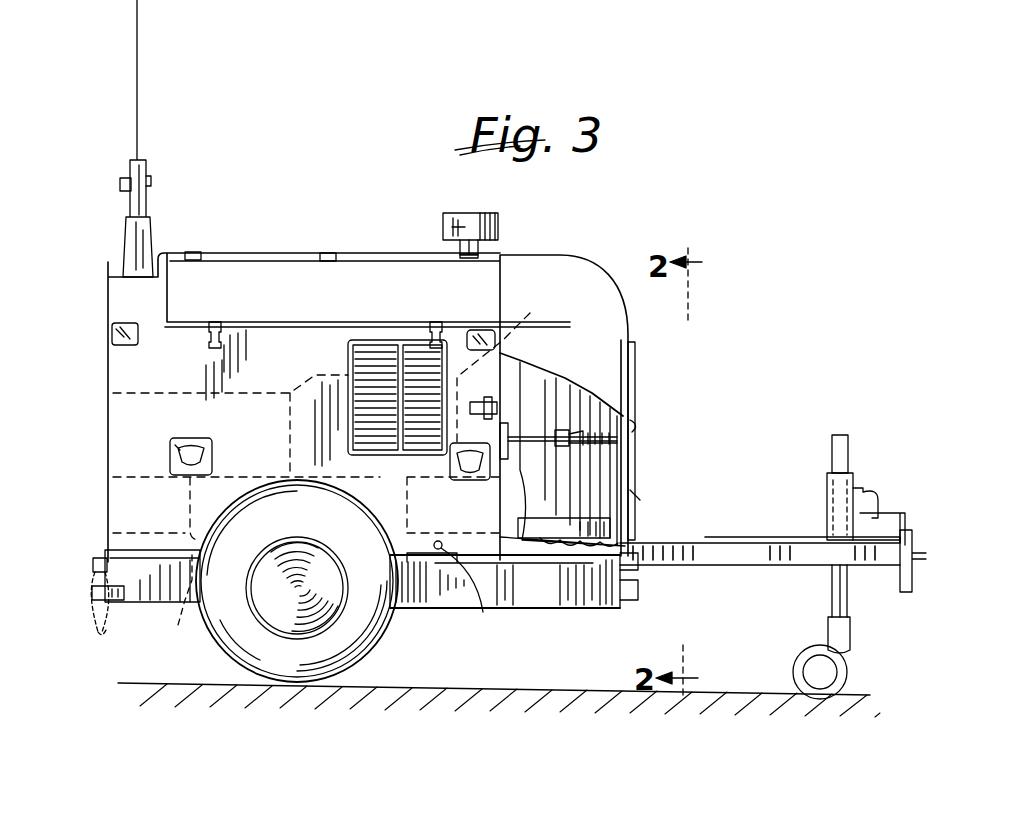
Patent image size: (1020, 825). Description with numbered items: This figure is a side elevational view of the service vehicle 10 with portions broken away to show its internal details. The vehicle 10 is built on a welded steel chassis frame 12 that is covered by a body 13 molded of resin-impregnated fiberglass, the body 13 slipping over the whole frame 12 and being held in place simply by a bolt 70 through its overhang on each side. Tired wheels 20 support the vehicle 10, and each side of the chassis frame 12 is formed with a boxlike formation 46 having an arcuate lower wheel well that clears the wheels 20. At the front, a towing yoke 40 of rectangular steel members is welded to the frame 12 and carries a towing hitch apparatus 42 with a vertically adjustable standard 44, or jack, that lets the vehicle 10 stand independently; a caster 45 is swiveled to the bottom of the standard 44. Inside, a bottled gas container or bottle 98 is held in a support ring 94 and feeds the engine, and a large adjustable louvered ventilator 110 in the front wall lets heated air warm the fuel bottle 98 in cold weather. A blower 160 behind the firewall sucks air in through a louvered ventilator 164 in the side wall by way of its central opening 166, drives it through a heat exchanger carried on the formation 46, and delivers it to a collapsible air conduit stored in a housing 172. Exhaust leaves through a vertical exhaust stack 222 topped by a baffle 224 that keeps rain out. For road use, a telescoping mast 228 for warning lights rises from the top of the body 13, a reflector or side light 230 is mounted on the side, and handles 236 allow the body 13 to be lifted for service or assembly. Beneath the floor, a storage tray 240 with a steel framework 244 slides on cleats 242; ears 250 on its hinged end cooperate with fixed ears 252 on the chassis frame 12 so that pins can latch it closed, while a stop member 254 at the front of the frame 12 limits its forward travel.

The service vehicle 10 is at (695, 430).
The chassis frame 12 is at (570, 566).
The body 13 is at (358, 252).
The tired wheels 20 is at (378, 633).
The towing yoke 40 is at (698, 545).
The towing hitch apparatus 42 is at (880, 473).
The vertically adjustable standard 44 is at (832, 603).
The caster 45 is at (798, 660).
The boxlike formation 46 is at (174, 606).
The bolt 70 is at (464, 593).
The support ring 94 is at (553, 528).
The bottle 98 is at (575, 410).
The louvered ventilator 110 is at (633, 368).
The blower 160 is at (340, 414).
The louvered ventilator 164 is at (365, 345).
The blower opening 166 is at (402, 340).
The conduit housing 172 is at (142, 415).
The exhaust stack 222 is at (478, 245).
The baffle 224 is at (477, 213).
The mast 228 is at (126, 192).
The reflector and side light 230 is at (480, 330).
The handle 236 is at (470, 480).
The storage tray 240 is at (567, 612).
The cleats 242 is at (518, 560).
The steel framework 244 is at (612, 600).
The ears 250 is at (108, 578).
The fixed ears 252 is at (96, 558).
The stop member 254 is at (625, 578).